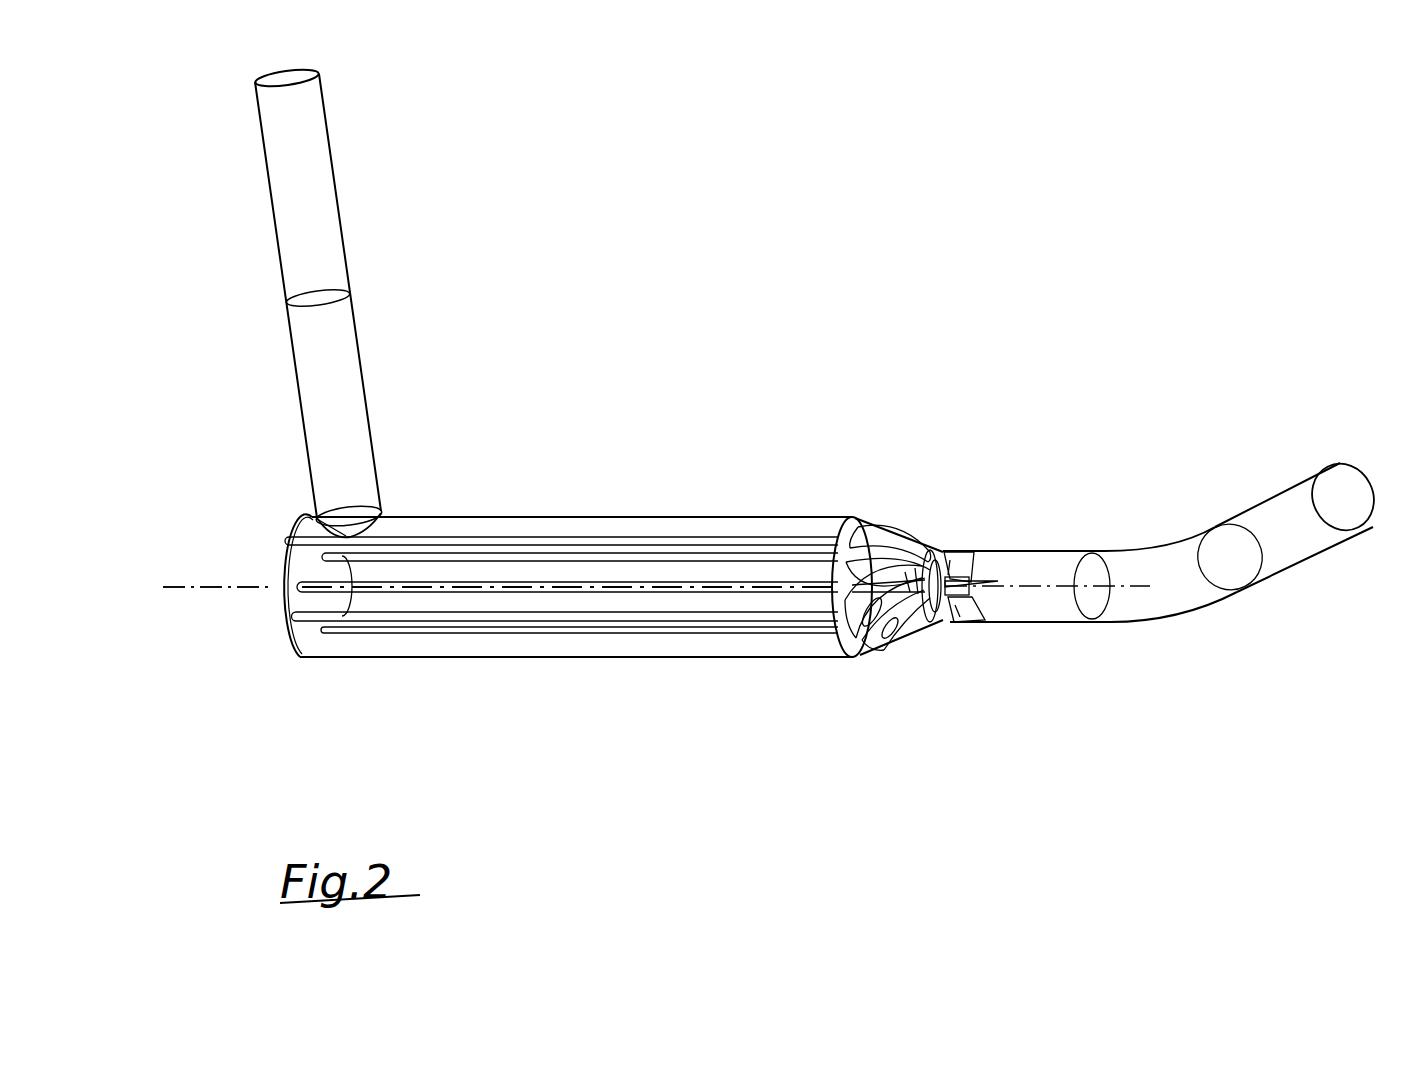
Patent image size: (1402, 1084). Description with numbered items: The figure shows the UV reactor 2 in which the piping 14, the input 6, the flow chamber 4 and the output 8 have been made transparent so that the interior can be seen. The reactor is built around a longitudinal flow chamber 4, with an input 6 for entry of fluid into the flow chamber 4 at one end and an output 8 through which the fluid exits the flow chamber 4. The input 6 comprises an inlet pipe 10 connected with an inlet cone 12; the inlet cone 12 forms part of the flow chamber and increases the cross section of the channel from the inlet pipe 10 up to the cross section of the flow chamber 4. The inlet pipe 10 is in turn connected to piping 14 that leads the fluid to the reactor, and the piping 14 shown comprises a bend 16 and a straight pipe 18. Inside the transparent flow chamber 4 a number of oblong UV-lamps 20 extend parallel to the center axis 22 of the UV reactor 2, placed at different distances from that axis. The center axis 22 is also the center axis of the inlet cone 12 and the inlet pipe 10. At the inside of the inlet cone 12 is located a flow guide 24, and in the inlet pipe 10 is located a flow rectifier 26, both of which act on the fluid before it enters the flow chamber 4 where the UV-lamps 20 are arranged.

The UV reactor 2 is at (712, 345).
The flow chamber 4 is at (620, 657).
The input 6 is at (965, 468).
The output 8 is at (350, 358).
The inlet pipe 10 is at (1019, 606).
The inlet cone 12 is at (888, 525).
The piping 14 is at (1231, 452).
The bend 16 is at (1162, 606).
The straight pipe 18 is at (1298, 550).
The UV-lamps 20 is at (623, 543).
The center axis 22 is at (268, 587).
The flow guide 24 is at (921, 525).
The flow rectifier 26 is at (965, 608).